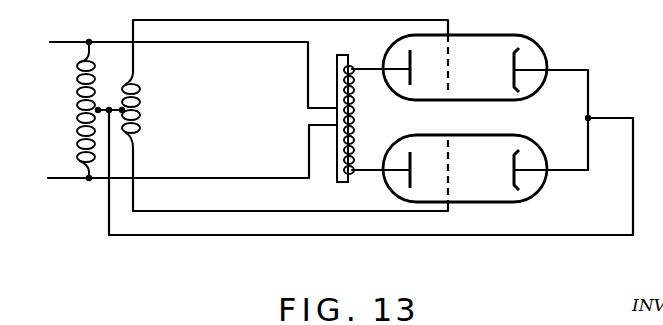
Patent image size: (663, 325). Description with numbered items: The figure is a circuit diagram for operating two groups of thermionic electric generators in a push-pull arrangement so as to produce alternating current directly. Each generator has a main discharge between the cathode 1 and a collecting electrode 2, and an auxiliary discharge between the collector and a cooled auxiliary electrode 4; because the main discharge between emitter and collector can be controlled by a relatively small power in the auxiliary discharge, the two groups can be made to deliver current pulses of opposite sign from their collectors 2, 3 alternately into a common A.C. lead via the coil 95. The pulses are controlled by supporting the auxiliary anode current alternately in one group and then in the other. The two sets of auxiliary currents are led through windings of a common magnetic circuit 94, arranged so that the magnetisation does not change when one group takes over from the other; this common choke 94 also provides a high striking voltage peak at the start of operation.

The cathode 1 is at (517, 59).
The collecting electrode 2 is at (450, 60).
The collector 3 is at (450, 170).
The auxiliary electrode 4 is at (409, 57).
The common magnetic circuit 94 is at (348, 118).
The coil 95 is at (125, 110).